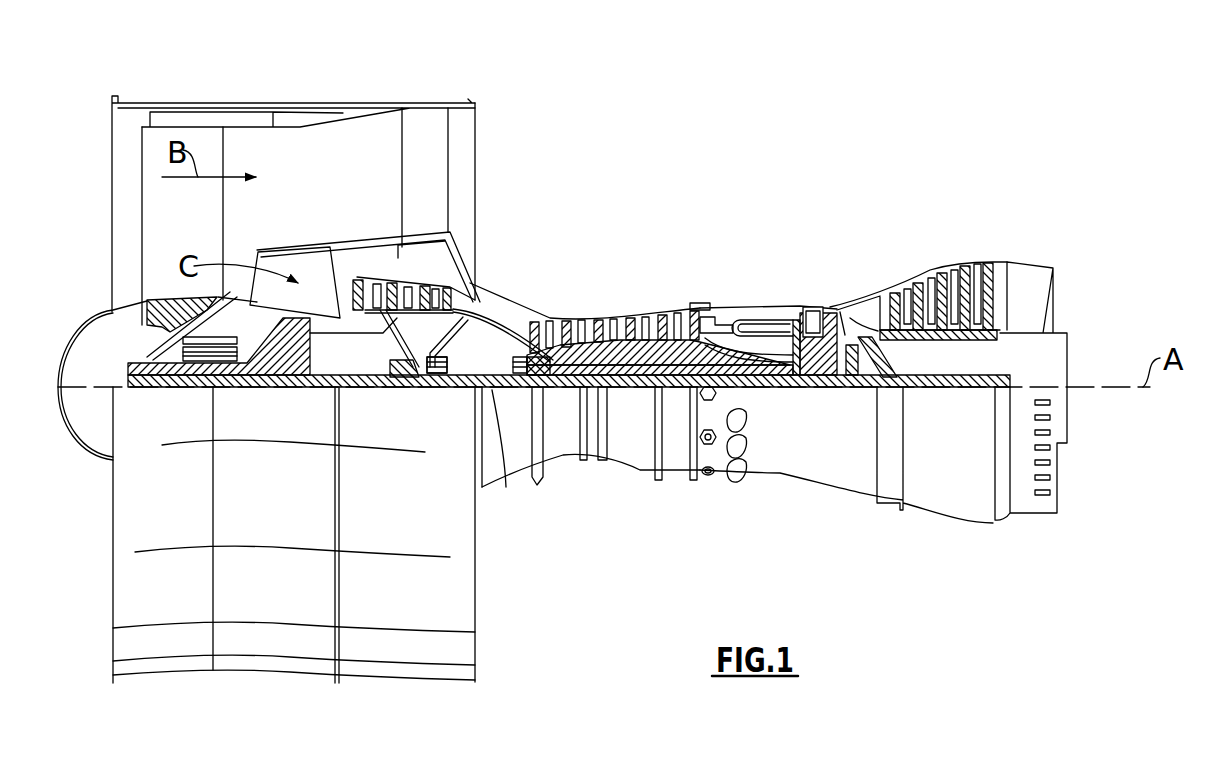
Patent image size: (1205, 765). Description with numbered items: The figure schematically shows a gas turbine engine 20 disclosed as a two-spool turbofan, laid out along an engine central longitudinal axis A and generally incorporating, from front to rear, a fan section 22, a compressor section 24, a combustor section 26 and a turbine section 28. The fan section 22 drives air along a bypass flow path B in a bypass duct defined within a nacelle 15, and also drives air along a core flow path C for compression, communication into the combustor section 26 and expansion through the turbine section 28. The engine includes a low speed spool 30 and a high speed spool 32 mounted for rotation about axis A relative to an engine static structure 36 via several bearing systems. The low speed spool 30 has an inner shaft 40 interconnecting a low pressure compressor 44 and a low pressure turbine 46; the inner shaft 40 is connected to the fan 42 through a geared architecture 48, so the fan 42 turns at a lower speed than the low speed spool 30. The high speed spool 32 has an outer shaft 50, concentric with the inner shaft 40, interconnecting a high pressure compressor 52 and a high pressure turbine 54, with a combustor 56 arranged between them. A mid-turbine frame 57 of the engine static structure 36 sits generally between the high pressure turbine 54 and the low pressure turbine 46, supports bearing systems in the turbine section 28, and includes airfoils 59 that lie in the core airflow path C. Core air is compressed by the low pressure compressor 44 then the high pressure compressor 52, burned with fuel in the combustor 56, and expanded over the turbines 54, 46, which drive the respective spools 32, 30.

The nacelle 15 is at (295, 108).
The gas turbine engine 20 is at (754, 155).
The fan section 22 is at (221, 92).
The compressor section 24 is at (527, 290).
The combustor section 26 is at (748, 278).
The turbine section 28 is at (899, 242).
The low speed spool 30 is at (633, 398).
The high speed spool 32 is at (672, 330).
The engine static structure 36 is at (673, 481).
The inner shaft 40 is at (497, 402).
The fan 42 is at (197, 231).
The low pressure compressor 44 is at (397, 296).
The low pressure turbine 46 is at (940, 280).
The geared architecture 48 is at (297, 365).
The outer shaft 50 is at (753, 362).
The high pressure compressor 52 is at (593, 327).
The high pressure turbine 54 is at (815, 306).
The combustor 56 is at (747, 328).
The mid-turbine frame 57 is at (859, 292).
The airfoils 59 is at (880, 340).